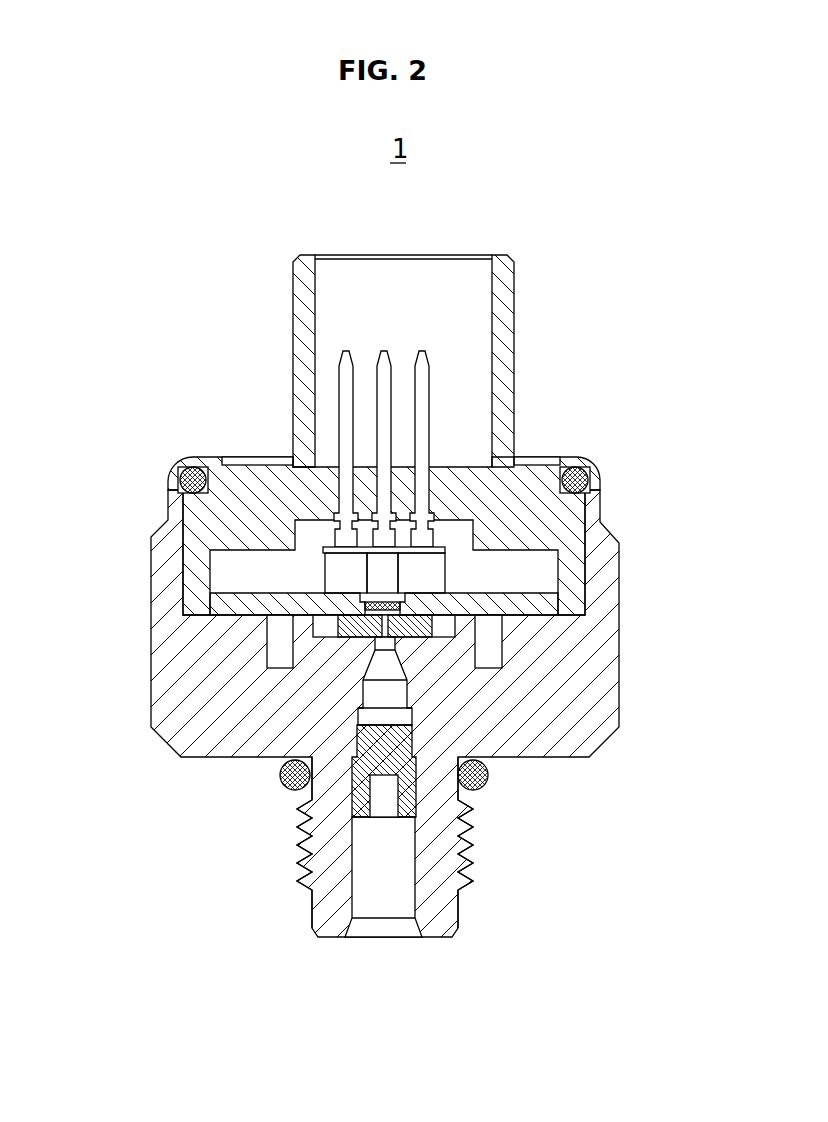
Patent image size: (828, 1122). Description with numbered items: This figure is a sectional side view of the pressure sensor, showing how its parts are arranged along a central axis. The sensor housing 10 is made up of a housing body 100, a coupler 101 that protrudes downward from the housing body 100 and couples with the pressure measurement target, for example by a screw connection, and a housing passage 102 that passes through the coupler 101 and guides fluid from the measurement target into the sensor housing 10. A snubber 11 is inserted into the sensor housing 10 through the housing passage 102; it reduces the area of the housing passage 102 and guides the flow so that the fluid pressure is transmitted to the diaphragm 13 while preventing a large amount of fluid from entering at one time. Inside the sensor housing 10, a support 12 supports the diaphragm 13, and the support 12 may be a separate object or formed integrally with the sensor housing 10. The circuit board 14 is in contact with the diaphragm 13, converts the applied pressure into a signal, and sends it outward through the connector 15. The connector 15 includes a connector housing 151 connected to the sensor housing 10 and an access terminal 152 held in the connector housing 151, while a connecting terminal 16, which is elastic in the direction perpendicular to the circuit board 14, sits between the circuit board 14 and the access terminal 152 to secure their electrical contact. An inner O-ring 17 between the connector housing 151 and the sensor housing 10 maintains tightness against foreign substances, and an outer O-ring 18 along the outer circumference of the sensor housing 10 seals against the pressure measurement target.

The sensor housing 10 is at (125, 780).
The housing body 100 is at (207, 758).
The coupler 101 is at (297, 880).
The housing passage 102 is at (372, 864).
The snubber 11 is at (410, 797).
The support 12 is at (425, 627).
The diaphragm 13 is at (398, 598).
The circuit board 14 is at (212, 603).
The connector 15 is at (212, 342).
The connector housing 151 is at (303, 353).
The access terminal 152 is at (345, 440).
The connecting terminal 16 is at (438, 575).
The inner O-ring 17 is at (593, 466).
The outer O-ring 18 is at (490, 776).